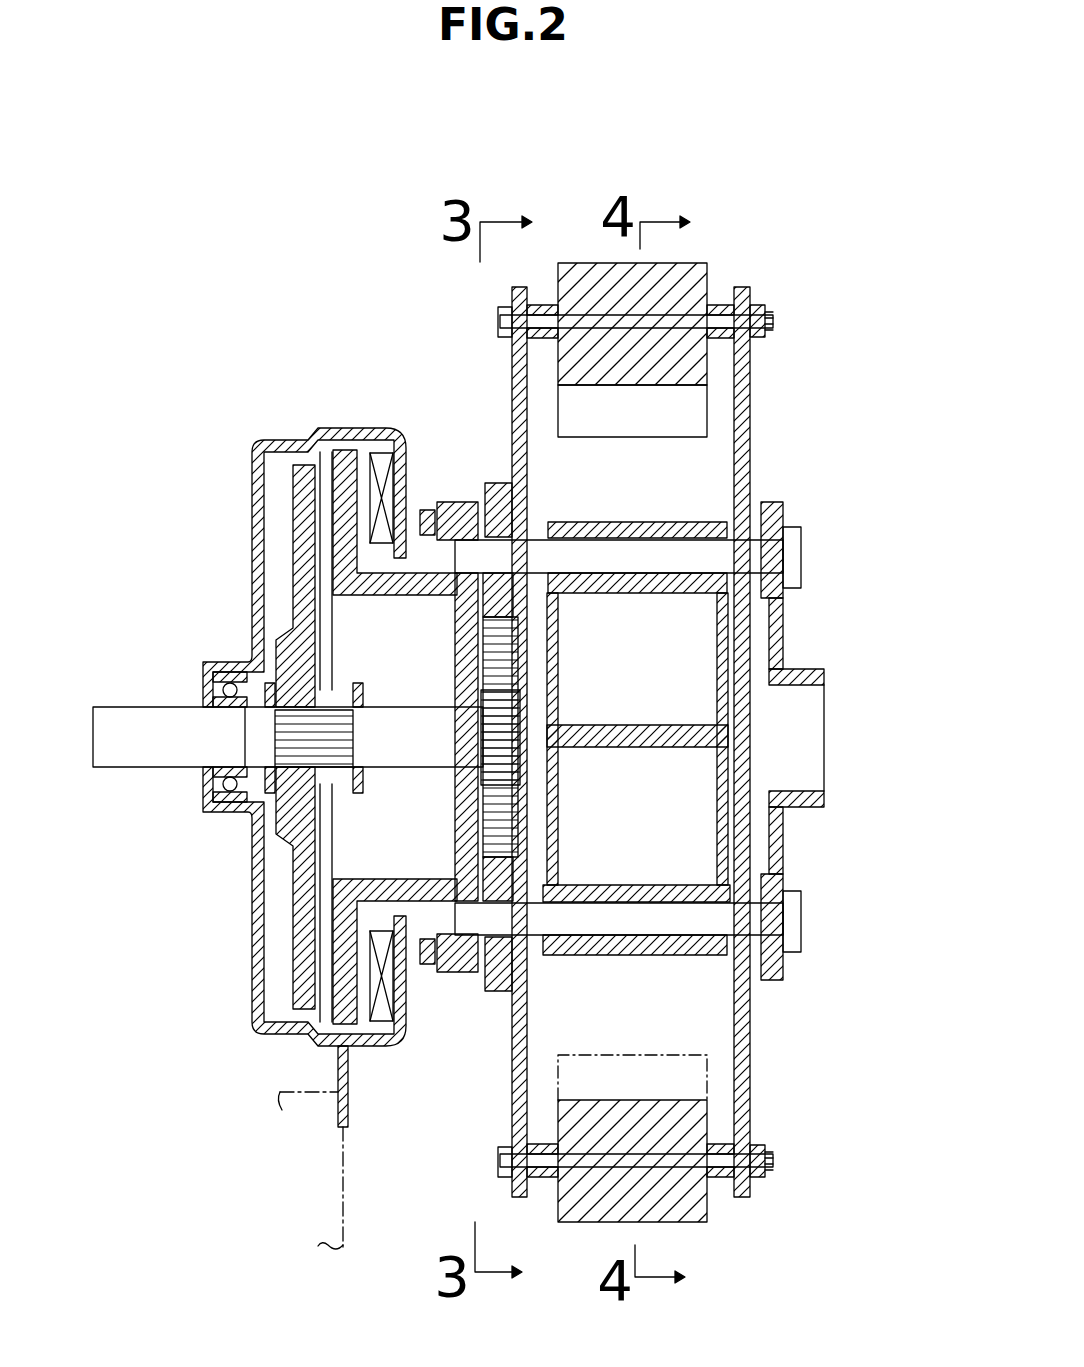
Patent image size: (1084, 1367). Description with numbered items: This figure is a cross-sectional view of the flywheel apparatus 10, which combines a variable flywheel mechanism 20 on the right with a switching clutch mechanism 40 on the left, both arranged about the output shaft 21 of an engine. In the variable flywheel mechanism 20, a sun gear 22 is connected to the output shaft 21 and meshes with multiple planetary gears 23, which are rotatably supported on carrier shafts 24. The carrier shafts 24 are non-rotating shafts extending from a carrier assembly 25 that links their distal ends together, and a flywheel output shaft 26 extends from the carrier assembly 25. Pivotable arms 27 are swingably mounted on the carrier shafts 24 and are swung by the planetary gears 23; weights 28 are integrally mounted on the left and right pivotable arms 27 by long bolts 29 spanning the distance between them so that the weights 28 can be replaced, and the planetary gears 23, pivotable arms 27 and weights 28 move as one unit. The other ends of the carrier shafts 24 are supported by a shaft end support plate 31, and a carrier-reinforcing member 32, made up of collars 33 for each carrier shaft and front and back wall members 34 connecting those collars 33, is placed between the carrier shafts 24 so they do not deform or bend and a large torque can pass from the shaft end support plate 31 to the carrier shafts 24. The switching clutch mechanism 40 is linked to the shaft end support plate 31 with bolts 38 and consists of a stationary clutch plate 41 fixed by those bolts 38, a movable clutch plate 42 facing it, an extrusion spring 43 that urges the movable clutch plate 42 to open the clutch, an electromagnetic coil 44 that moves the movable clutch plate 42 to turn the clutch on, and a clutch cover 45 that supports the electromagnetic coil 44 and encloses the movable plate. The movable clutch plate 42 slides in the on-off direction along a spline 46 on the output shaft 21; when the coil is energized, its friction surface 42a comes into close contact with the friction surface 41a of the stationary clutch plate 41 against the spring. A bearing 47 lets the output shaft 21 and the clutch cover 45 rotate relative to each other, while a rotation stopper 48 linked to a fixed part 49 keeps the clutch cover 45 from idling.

The drive device 10 is at (140, 176).
The variable flywheel mechanism 20 is at (483, 142).
The output shaft 21 is at (125, 725).
The sun gear 22 is at (520, 695).
The planetary gears 23 is at (520, 645).
The carrier shafts 24 is at (801, 555).
The carrier assembly 25 is at (783, 830).
The flywheel output shaft 26 is at (824, 800).
The pivotable arms 27 is at (515, 410).
The weights 28 is at (693, 263).
The long bolts 29 is at (776, 322).
The shaft end support plate 31 is at (466, 502).
The carrier-reinforcing member 32 is at (710, 697).
The collars 33 is at (648, 522).
The front and back wall members 34 is at (562, 786).
The bolts 38 is at (428, 510).
The switching clutch mechanism 40 is at (215, 272).
The stationary clutch plate 41 is at (350, 455).
The friction surface 41a is at (338, 455).
The movable clutch plate 42 is at (292, 445).
The friction surface 42a is at (310, 458).
The extrusion spring 43 is at (348, 790).
The electromagnetic coil 44 is at (383, 455).
The clutch cover 45 is at (250, 570).
The spline 46 is at (352, 732).
The bearing 47 is at (212, 772).
The rotation stopper 48 is at (348, 1068).
The fixed part 49 is at (343, 1165).